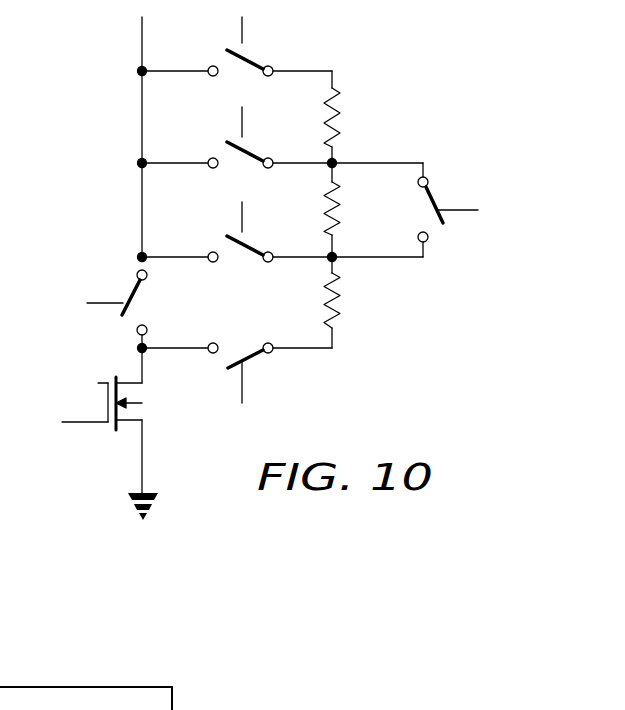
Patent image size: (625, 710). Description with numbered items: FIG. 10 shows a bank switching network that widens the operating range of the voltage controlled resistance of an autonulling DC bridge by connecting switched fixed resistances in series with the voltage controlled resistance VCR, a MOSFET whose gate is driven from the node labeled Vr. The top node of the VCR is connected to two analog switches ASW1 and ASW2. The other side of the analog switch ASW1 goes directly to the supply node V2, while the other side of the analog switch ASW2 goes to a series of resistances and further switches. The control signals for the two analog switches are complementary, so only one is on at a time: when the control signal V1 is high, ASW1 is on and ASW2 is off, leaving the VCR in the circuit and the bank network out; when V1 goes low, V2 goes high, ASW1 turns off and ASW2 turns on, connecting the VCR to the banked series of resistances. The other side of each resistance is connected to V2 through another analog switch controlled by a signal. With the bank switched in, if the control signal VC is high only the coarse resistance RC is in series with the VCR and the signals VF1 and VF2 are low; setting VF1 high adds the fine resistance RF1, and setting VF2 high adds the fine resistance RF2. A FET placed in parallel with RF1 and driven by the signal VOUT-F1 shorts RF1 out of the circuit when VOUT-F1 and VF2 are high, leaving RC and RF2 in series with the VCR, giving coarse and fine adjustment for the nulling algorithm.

The supply voltage V2 is at (187, 215).
The control signal VF2 is at (237, 38).
The control signal VF1 is at (237, 135).
The control signal Vc VC is at (237, 229).
The control signal V1 is at (104, 283).
The analog switch ASW1 is at (163, 326).
The analog switch ASW2 is at (237, 334).
The fine resistance RF2 is at (354, 117).
The fine resistance RF1 is at (353, 210).
The coarse resistance Rc RC is at (349, 302).
The control signal Vout-F1 VOUT-F1 is at (432, 210).
The voltage controlled resistance VCR is at (143, 435).
The reference voltage Vr is at (81, 400).